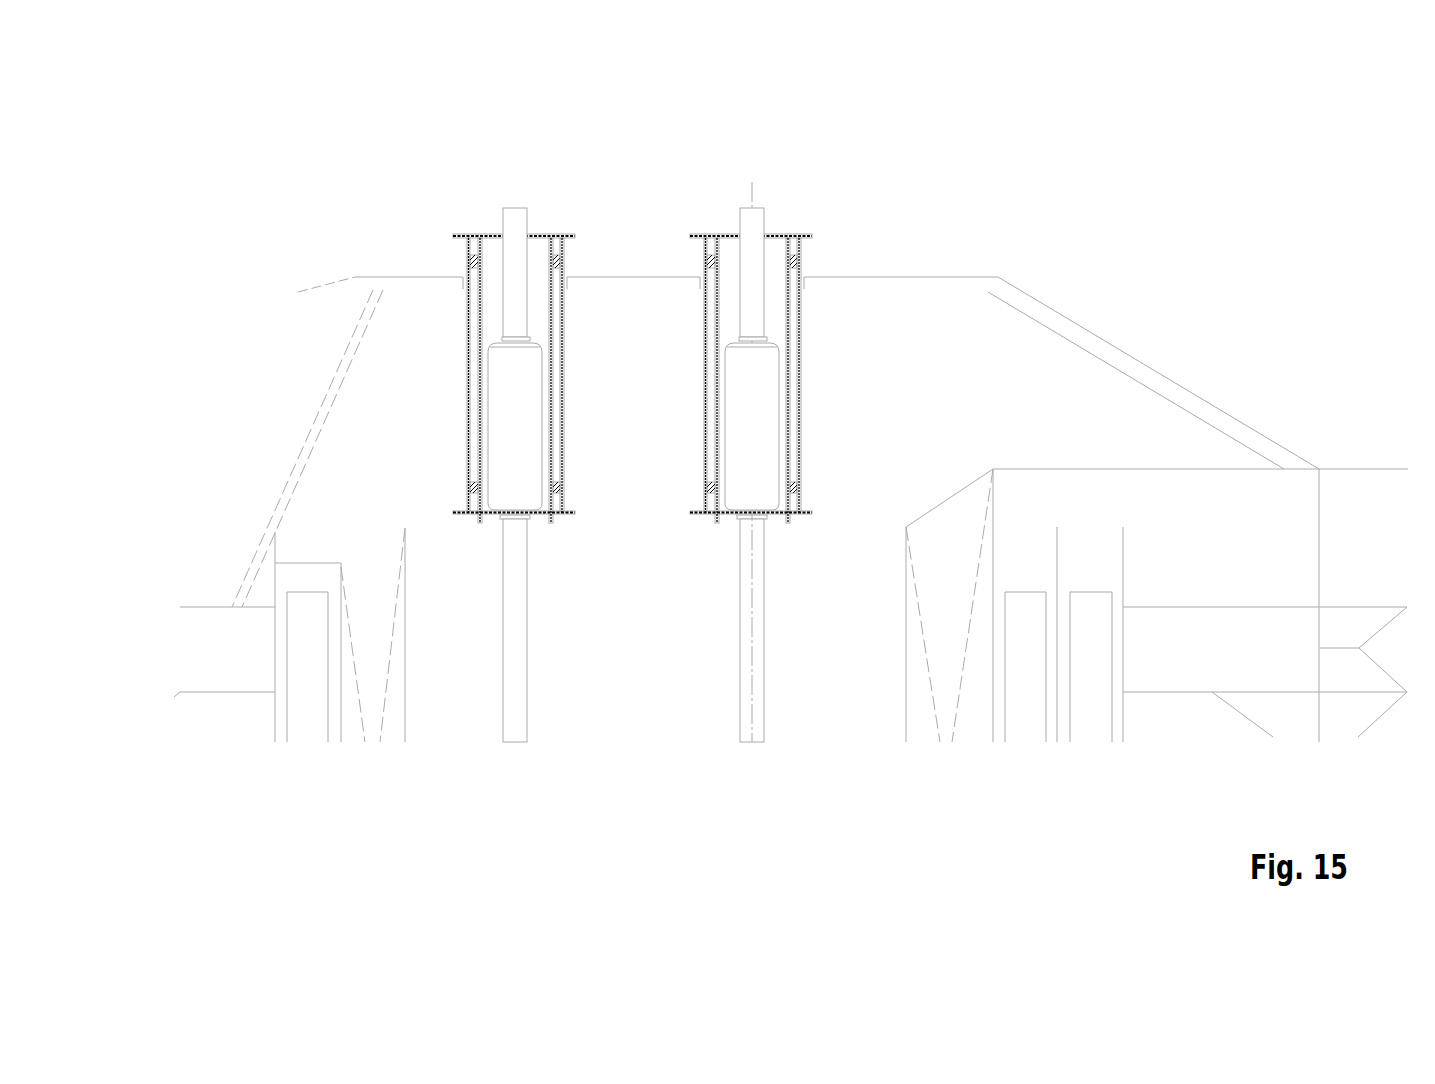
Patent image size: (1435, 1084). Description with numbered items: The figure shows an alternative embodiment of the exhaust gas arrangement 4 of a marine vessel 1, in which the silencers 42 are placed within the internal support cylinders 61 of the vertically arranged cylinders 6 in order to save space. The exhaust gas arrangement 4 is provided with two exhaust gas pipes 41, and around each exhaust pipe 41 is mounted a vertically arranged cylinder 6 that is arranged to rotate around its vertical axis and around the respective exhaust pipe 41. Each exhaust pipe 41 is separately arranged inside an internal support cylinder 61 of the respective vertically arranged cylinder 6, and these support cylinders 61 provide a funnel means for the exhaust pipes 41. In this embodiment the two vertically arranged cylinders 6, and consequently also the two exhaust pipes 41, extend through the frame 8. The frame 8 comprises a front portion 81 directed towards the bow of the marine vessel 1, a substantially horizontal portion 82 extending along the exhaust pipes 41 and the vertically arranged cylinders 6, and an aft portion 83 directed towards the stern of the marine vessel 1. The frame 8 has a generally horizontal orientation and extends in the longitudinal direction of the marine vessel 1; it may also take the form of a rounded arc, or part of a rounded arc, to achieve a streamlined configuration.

The marine vessel 1 is at (1252, 375).
The exhaust gas arrangement 4 is at (358, 500).
The vertically arranged cylinder 6 is at (585, 448).
The frame 8 is at (808, 285).
The exhaust gas pipe 41 is at (507, 275).
The silencer 42 is at (530, 440).
The internal support cylinder 61 is at (552, 305).
The front portion 81 is at (1147, 377).
The substantially horizontal portion 82 is at (862, 283).
The aft portion 83 is at (315, 428).